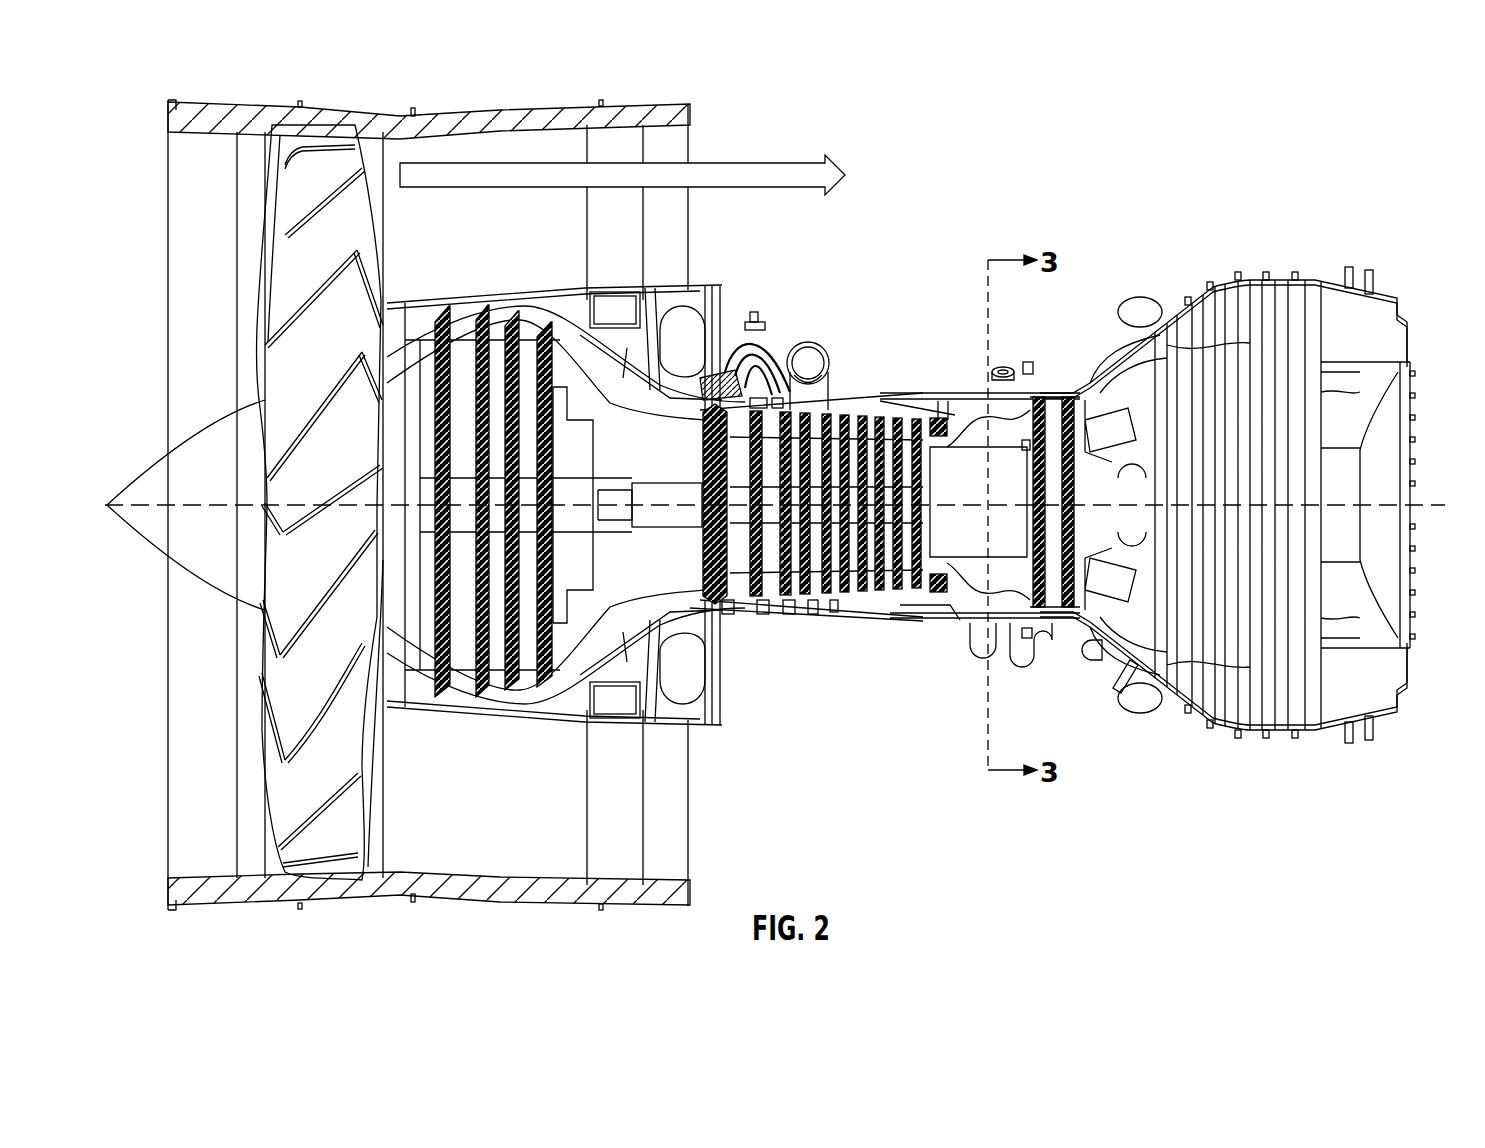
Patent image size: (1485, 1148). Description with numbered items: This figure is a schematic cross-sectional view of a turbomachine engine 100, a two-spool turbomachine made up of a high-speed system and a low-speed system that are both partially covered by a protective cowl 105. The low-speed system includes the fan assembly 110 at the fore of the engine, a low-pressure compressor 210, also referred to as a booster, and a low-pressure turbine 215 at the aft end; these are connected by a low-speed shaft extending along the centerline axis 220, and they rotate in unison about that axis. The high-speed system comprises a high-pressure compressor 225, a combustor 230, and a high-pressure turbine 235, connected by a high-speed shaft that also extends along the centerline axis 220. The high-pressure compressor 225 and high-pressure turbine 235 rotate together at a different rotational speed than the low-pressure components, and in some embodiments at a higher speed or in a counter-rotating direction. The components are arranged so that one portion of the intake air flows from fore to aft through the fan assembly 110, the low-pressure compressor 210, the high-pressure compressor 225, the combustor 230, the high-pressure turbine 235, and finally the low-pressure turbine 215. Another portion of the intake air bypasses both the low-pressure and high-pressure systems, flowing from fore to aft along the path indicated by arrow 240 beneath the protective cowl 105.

The turbomachine engine 100 is at (786, 485).
The protective cowl 105 is at (440, 126).
The fan assembly 110 is at (297, 316).
The low-pressure compressor 210 is at (457, 352).
The low-pressure turbine 215 is at (1283, 290).
The centerline axis 220 is at (1420, 505).
The high-pressure compressor 225 is at (868, 432).
The combustor 230 is at (983, 413).
The high-pressure turbine 235 is at (1050, 585).
The arrow 240 is at (778, 177).